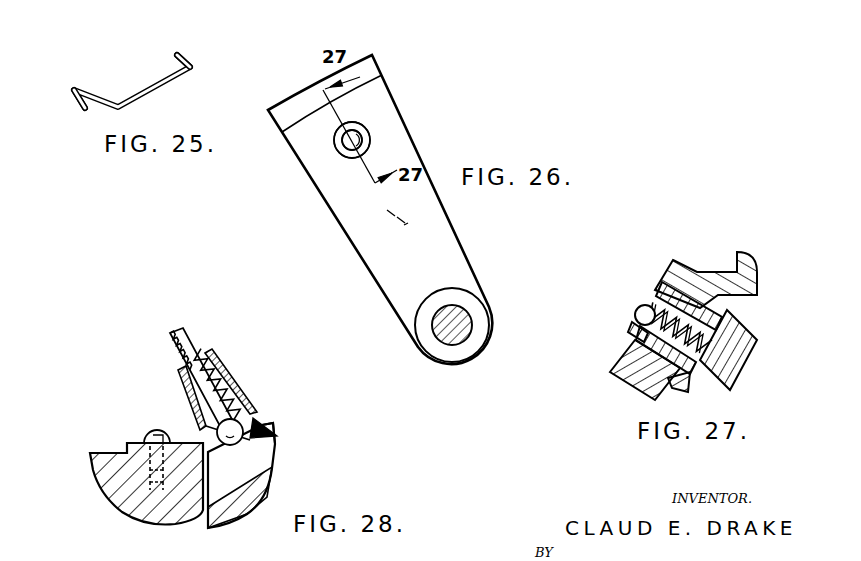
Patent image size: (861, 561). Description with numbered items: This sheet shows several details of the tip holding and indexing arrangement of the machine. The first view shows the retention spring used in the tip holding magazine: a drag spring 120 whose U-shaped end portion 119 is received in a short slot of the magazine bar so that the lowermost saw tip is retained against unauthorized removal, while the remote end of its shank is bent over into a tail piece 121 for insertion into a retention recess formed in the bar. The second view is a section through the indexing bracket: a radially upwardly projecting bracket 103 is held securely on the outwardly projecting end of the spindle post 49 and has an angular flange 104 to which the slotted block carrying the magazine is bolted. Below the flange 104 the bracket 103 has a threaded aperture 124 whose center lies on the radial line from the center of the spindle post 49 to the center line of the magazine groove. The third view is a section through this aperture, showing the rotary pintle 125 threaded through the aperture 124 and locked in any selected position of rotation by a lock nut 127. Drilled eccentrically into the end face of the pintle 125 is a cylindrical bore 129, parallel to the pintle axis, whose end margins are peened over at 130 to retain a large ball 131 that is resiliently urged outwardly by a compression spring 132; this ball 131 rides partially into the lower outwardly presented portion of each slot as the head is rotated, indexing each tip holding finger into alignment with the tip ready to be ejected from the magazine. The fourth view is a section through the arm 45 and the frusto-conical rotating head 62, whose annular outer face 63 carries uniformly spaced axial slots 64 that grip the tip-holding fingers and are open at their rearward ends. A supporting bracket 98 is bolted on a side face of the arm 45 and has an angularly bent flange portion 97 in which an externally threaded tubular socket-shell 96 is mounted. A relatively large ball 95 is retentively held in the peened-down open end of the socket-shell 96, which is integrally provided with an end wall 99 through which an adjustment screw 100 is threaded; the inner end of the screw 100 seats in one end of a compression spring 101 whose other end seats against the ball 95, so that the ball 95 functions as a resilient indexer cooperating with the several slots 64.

In FIG. 25, the U-shaped end portion 119 is at (77, 108).
In FIG. 25, the drag spring 120 is at (163, 86).
In FIG. 25, the tail piece 121 is at (187, 56).
In FIG. 26, the bracket 103 is at (463, 258).
In FIG. 27, the bracket 103 is at (617, 373).
In FIG. 26, the spindle post 49 is at (447, 337).
In FIG. 26, the ball 131 is at (357, 134).
In FIG. 27, the ball 131 is at (636, 308).
In FIG. 26, the rotary pintle 125 is at (337, 151).
In FIG. 27, the rotary pintle 125 is at (750, 337).
In FIG. 26, the threaded aperture 124 is at (348, 160).
In FIG. 27, the threaded aperture 124 is at (623, 352).
In FIG. 27, the angular flange 104 is at (753, 278).
In FIG. 27, the compression spring 132 is at (660, 291).
In FIG. 27, the peened-over margins 130 is at (638, 324).
In FIG. 27, the cylindrical bore 129 is at (708, 388).
In FIG. 27, the lock nut 127 is at (672, 386).
In FIG. 28, the arm 45 is at (133, 518).
In FIG. 28, the supporting bracket 98 is at (177, 437).
In FIG. 28, the axial slots 64 is at (272, 468).
In FIG. 28, the rotating head 62 is at (272, 503).
In FIG. 28, the annular outer face 63 is at (270, 426).
In FIG. 28, the tubular socket-shell 96 is at (223, 376).
In FIG. 28, the adjustment screw 100 is at (172, 345).
In FIG. 28, the end wall 99 is at (207, 355).
In FIG. 28, the compression spring 101 is at (234, 406).
In FIG. 28, the angularly bent flange portion 97 is at (262, 424).
In FIG. 28, the ball 95 is at (228, 446).